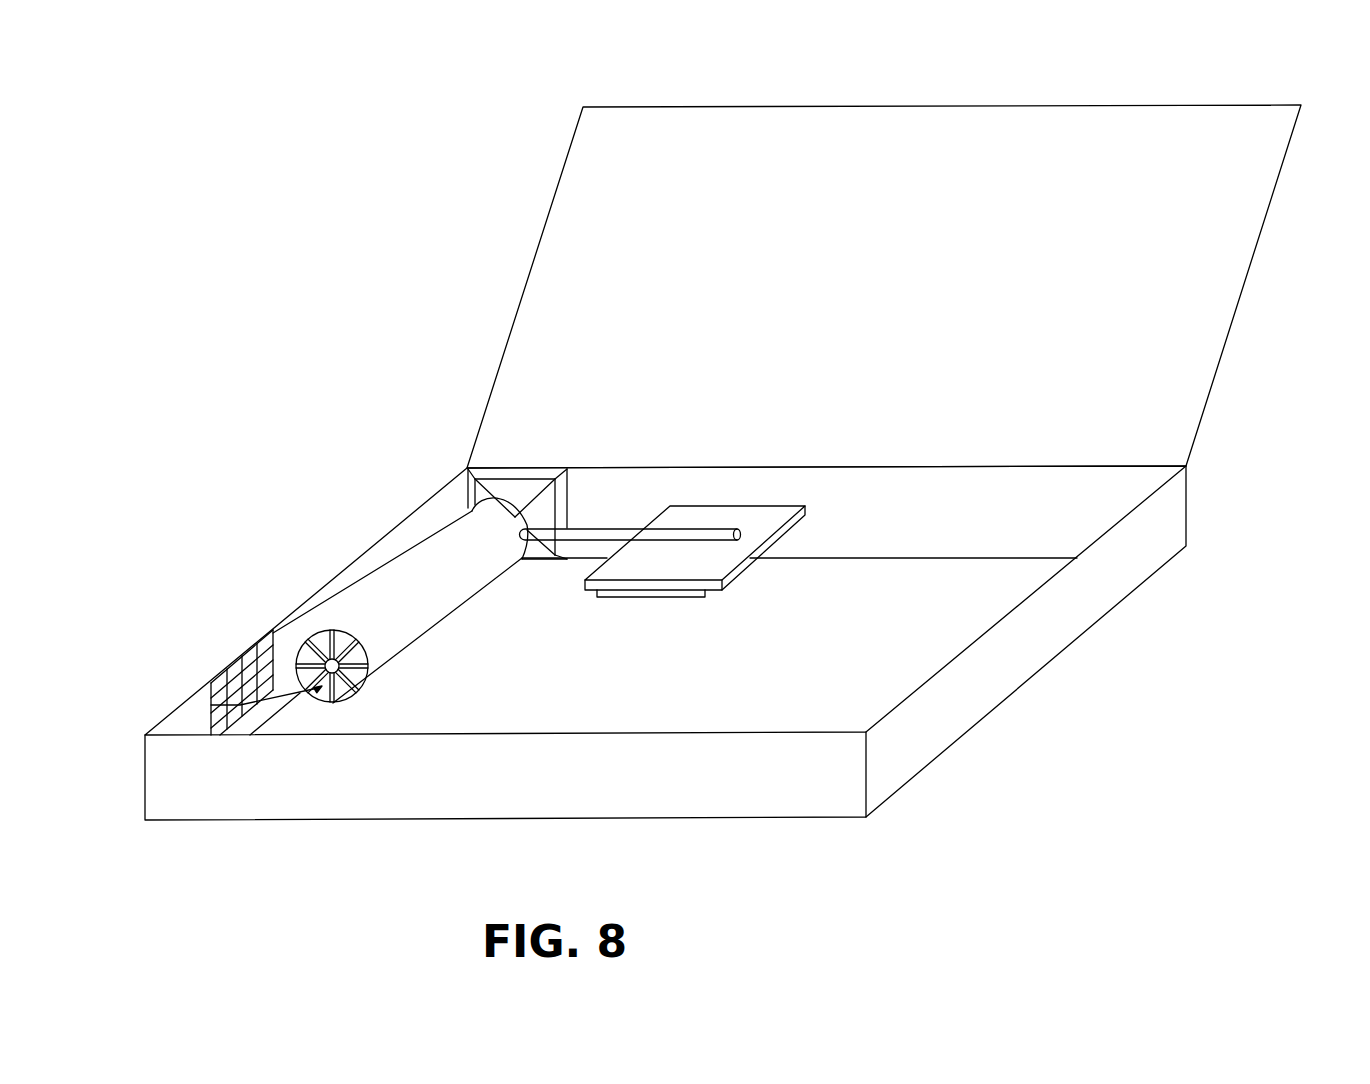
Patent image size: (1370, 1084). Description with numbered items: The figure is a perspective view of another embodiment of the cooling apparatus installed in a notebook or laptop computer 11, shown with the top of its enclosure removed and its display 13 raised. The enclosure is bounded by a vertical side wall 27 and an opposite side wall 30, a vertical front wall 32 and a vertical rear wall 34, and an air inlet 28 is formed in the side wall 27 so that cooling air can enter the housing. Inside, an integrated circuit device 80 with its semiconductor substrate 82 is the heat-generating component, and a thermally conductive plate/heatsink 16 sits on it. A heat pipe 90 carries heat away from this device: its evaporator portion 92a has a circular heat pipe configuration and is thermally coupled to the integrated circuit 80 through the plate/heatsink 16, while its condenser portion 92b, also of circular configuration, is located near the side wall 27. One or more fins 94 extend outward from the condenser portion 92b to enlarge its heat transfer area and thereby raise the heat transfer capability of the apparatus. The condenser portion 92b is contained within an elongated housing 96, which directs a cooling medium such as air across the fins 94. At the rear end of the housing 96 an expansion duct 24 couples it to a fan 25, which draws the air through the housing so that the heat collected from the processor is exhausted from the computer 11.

The notebook or laptop computer 11 is at (734, 462).
The display 13 is at (1220, 288).
The heat sink 16 is at (778, 518).
The expansion duct 24 is at (513, 488).
The fan 25 is at (533, 473).
The side wall 27 is at (188, 726).
The air inlet 28 is at (243, 641).
The side wall 30 is at (977, 695).
The front wall 32 is at (786, 795).
The rear wall 34 is at (949, 535).
The integrated circuit device 80 is at (725, 579).
The semiconductor substrate 82 is at (662, 598).
The heat pipe 90 is at (541, 575).
The evaporator portion 92a is at (717, 534).
The condenser portion 92b is at (340, 690).
The fins 94 is at (367, 658).
The housing 96 is at (440, 560).